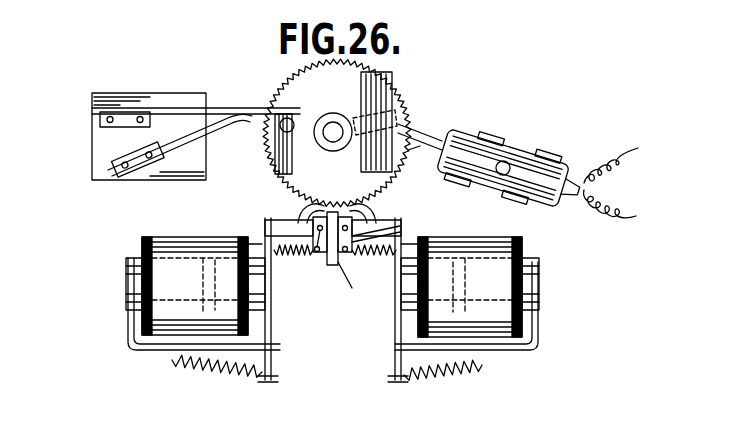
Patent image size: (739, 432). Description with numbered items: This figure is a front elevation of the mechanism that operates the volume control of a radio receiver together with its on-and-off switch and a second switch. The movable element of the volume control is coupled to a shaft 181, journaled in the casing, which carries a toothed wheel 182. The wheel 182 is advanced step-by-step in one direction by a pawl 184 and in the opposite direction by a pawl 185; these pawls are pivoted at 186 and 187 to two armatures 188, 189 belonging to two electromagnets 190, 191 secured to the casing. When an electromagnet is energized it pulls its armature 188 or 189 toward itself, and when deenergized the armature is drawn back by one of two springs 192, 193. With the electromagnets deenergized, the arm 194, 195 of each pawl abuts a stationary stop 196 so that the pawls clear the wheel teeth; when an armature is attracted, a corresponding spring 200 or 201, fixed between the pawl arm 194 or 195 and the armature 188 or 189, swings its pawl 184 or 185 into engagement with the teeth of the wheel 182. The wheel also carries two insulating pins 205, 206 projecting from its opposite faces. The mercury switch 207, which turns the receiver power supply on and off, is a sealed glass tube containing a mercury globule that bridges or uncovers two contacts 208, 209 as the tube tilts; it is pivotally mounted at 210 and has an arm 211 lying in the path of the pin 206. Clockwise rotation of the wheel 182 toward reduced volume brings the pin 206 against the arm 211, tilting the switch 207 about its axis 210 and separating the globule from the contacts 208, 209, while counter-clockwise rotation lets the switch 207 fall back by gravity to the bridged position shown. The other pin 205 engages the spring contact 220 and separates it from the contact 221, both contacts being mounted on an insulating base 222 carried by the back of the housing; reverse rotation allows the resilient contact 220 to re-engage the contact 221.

The shaft 181 is at (338, 142).
The toothed wheel 182 is at (376, 76).
The pawl 184 is at (300, 214).
The pawl 185 is at (360, 211).
The pivot 186 is at (328, 263).
The pivot 187 is at (401, 226).
The armature 188 is at (272, 327).
The armature 189 is at (397, 327).
The electromagnet 190 is at (182, 237).
The electromagnet 191 is at (474, 238).
The spring 192 is at (258, 376).
The spring 193 is at (422, 372).
The pawl arm 194 is at (262, 238).
The pawl arm 195 is at (486, 240).
The stationary stop 196 is at (338, 266).
The spring 200 is at (290, 251).
The spring 201 is at (378, 251).
The pin 205 is at (281, 135).
The pin 206 is at (403, 113).
The mercury switch 207 is at (517, 150).
The contact 208 is at (589, 192).
The contact 209 is at (591, 175).
The pivot 210 is at (505, 180).
The arm 211 is at (412, 152).
The spring contact 220 is at (264, 108).
The contact 221 is at (202, 118).
The insulating base 222 is at (92, 153).